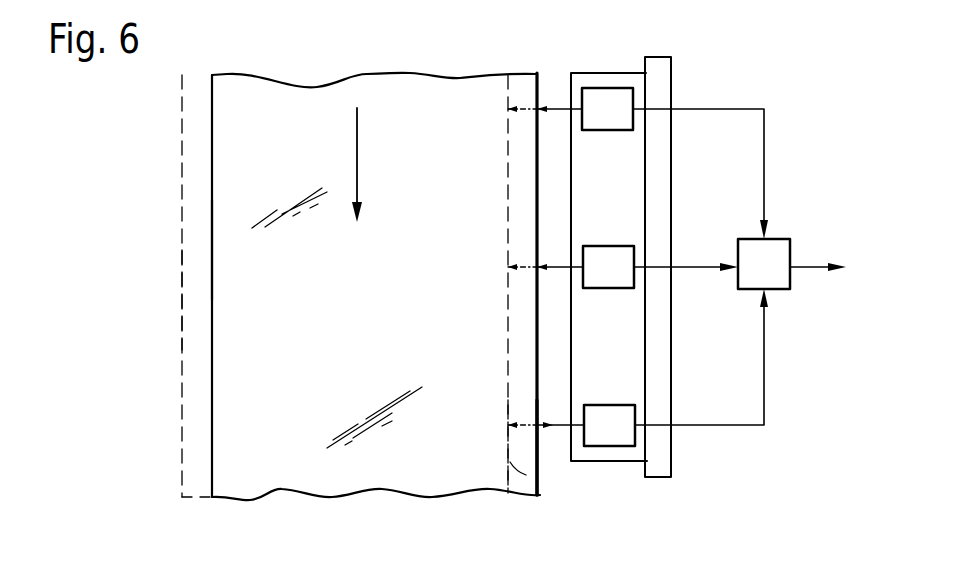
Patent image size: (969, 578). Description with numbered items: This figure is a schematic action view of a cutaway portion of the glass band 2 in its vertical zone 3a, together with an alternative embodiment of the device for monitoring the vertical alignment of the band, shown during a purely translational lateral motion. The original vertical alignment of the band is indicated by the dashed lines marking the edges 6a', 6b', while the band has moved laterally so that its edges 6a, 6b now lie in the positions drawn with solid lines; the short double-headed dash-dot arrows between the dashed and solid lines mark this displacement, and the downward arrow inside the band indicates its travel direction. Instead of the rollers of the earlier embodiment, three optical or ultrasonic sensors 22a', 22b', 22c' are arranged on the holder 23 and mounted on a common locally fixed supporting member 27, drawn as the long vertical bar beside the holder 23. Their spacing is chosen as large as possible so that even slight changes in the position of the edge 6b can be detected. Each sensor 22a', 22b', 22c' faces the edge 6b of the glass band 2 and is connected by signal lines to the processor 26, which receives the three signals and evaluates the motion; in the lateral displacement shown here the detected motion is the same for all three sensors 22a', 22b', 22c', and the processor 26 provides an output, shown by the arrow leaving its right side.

The glass band 2 is at (324, 286).
The vertical zone 3a is at (202, 165).
The edge 6a is at (161, 250).
The edge 6a' is at (161, 300).
The edge 6b is at (590, 453).
The edge 6b' is at (580, 468).
The optical or ultrasonic sensor 22a' is at (520, 131).
The optical or ultrasonic sensor 22b' is at (521, 250).
The optical or ultrasonic sensor 22c' is at (521, 393).
The holder 23 is at (583, 73).
The processor 26 is at (748, 292).
The supporting member 27 is at (672, 88).